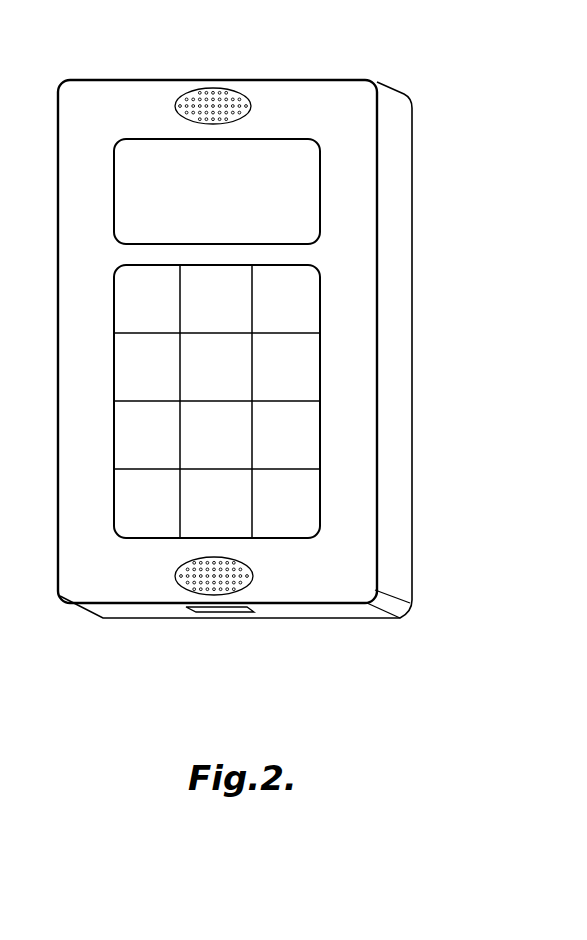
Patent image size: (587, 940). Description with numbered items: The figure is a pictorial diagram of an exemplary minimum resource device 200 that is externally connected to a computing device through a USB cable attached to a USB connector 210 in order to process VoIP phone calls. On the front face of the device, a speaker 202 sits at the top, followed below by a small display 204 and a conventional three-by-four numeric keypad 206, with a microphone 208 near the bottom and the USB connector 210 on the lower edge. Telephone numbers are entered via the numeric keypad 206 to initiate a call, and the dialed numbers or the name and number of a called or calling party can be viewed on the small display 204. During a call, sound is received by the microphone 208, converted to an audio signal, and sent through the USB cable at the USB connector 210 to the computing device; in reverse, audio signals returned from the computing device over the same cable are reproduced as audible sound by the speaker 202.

The minimum resource device 200 is at (330, 80).
The speaker 202 is at (219, 88).
The small display 204 is at (321, 192).
The numeric keypad 206 is at (321, 303).
The microphone 208 is at (258, 583).
The USB connector 210 is at (228, 613).